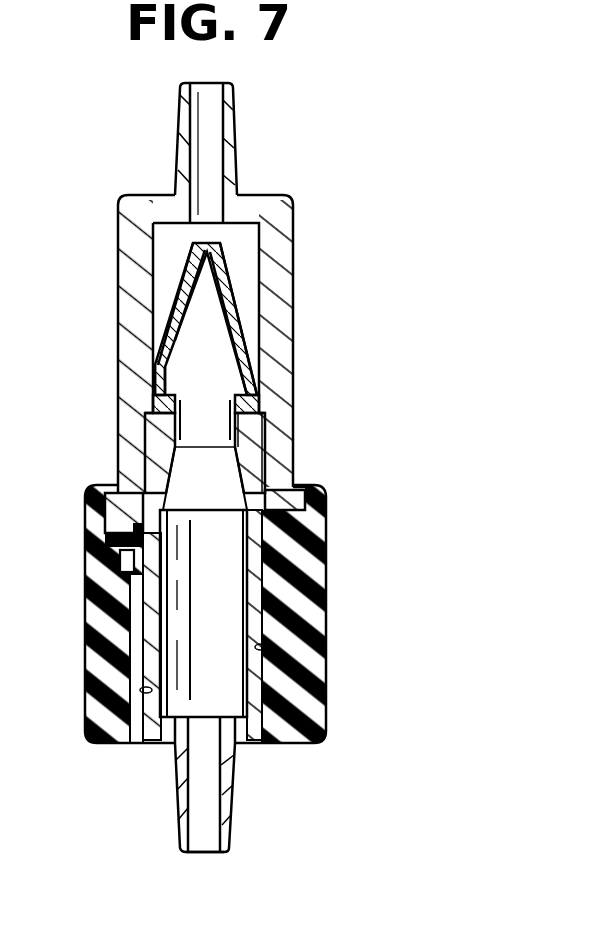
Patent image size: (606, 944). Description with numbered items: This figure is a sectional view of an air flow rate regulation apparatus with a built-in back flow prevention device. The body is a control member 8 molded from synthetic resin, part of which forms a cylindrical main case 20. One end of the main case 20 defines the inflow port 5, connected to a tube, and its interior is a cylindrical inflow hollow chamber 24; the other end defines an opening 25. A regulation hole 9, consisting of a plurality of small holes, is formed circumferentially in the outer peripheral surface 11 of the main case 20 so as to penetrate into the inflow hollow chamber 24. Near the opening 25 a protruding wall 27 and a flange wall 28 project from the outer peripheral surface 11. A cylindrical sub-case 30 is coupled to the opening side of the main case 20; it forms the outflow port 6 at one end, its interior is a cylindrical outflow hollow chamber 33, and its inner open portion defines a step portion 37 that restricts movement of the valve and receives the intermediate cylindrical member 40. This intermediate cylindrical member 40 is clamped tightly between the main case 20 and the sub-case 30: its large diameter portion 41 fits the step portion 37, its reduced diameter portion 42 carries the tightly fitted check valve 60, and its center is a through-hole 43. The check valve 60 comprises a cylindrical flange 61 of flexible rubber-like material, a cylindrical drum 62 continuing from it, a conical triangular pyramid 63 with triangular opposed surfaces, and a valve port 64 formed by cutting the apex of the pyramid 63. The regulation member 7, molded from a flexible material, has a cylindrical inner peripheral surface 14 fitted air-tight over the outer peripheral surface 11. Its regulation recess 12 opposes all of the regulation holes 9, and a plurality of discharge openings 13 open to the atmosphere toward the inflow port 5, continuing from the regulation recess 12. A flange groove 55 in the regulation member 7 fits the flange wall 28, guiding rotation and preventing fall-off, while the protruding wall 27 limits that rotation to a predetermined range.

The inflow port 5 is at (203, 855).
The outflow port 6 is at (200, 128).
The regulation member 7 is at (308, 608).
The control member 8 is at (158, 745).
The regulation hole 9 is at (112, 550).
The outer peripheral surface 11 is at (140, 690).
The regulation recess 12 is at (118, 565).
The discharge opening 13 is at (135, 626).
The inner peripheral surface 14 is at (268, 650).
The main case 20 is at (175, 800).
The inflow hollow chamber 24 is at (190, 654).
The opening 25 is at (208, 518).
The protruding wall 27 is at (120, 520).
The flange wall 28 is at (290, 504).
The sub-case 30 is at (133, 268).
The outflow hollow chamber 33 is at (168, 247).
The step portion 37 is at (150, 462).
The intermediate cylindrical member 40 is at (250, 476).
The large diameter portion 41 is at (260, 450).
The reduced diameter portion 42 is at (207, 403).
The through-hole 43 is at (243, 397).
The flange groove 55 is at (308, 497).
The check valve 60 is at (236, 295).
The cylindrical flange 61 is at (157, 418).
The cylindrical drum 62 is at (163, 363).
The conical triangular pyramid 63 is at (172, 300).
The valve port 64 is at (203, 250).